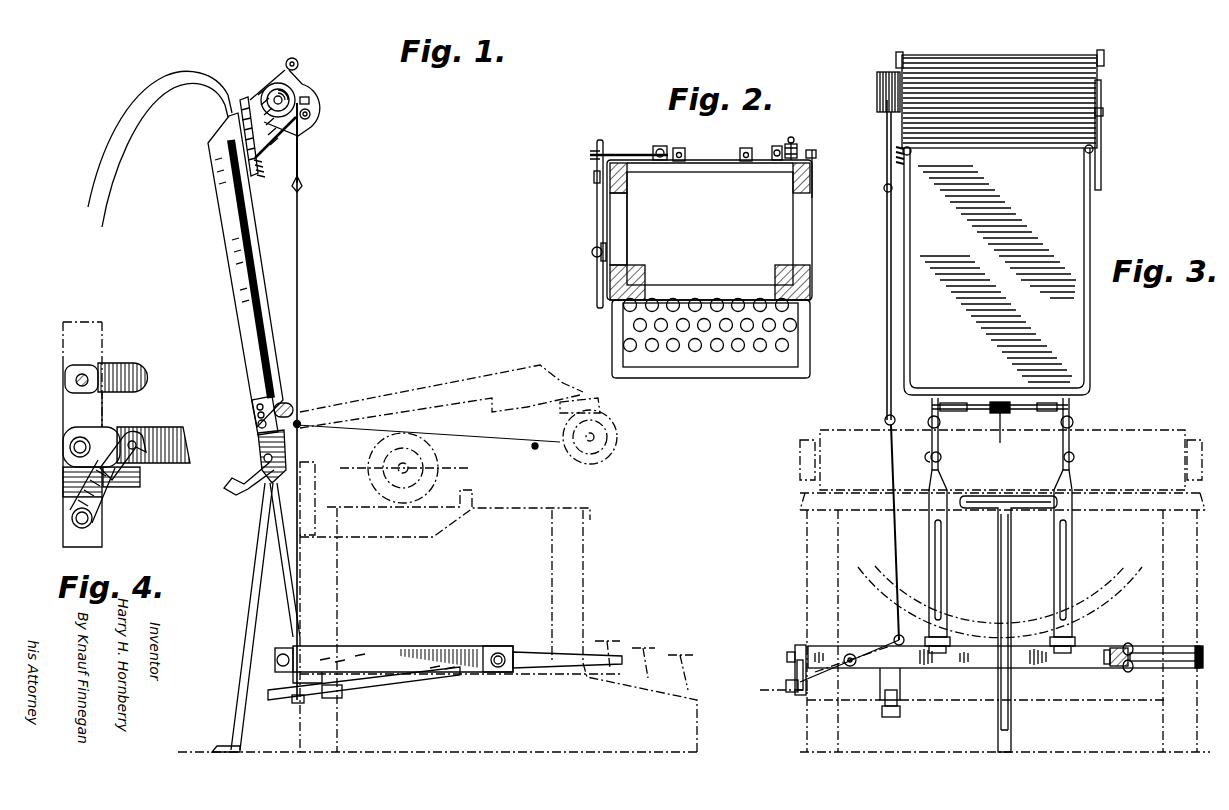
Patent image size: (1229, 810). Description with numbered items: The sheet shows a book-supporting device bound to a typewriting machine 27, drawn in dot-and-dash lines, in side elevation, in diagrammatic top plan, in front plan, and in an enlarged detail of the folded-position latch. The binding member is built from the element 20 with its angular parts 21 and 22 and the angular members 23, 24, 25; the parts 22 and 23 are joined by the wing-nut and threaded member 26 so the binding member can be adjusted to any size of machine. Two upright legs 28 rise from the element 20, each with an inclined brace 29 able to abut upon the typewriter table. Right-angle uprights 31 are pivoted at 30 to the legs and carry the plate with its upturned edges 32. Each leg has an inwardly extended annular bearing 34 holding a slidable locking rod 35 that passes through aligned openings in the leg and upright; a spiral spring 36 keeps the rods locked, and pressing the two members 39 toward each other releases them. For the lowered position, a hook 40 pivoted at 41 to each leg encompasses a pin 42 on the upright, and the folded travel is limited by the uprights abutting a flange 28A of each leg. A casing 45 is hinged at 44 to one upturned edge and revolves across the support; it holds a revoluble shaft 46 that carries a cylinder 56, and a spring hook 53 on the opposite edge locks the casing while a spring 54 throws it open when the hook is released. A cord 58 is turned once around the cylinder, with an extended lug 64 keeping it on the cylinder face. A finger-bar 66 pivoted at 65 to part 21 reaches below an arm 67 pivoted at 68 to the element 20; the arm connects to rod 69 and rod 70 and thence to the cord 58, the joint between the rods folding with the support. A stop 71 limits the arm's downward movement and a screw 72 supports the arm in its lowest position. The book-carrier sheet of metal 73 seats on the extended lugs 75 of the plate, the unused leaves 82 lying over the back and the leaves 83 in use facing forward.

In FIG. 2, the binding member element 20 is at (708, 160).
In FIG. 3, the binding member element 20 is at (955, 670).
In FIG. 1, the angular part 21 is at (395, 650).
In FIG. 2, the angular part 21 is at (607, 207).
In FIG. 3, the angular part 21 is at (800, 646).
In FIG. 2, the angular part 22 is at (775, 148).
In FIG. 3, the angular part 22 is at (1112, 648).
In FIG. 2, the angular member 23 is at (792, 144).
In FIG. 3, the angular member 23 is at (1130, 668).
In FIG. 2, the angular member 24 is at (812, 160).
In FIG. 3, the angular member 24 is at (1190, 653).
In FIG. 2, the angular member 25 is at (813, 180).
In FIG. 3, the angular member 25 is at (1196, 670).
In FIG. 2, the wing-nut and threaded member 26 is at (789, 137).
In FIG. 3, the wing-nut and threaded member 26 is at (1108, 668).
In FIG. 2, the typewriting machine 27 is at (813, 278).
In FIG. 1, the upright leg 28 is at (279, 560).
In FIG. 3, the upright leg 28 is at (928, 552).
In FIG. 4, the upright leg 28 is at (92, 523).
In FIG. 1, the flange 28A is at (300, 422).
In FIG. 4, the flange 28A is at (136, 487).
In FIG. 1, the inclined brace 29 is at (250, 612).
In FIG. 3, the inclined brace 29 is at (1011, 572).
In FIG. 1, the pivot 30 is at (258, 426).
In FIG. 3, the pivot 30 is at (941, 423).
In FIG. 4, the pivot 30 is at (70, 448).
In FIG. 1, the right-angle upright 31 is at (240, 294).
In FIG. 3, the right-angle upright 31 is at (932, 412).
In FIG. 4, the right-angle upright 31 is at (63, 330).
In FIG. 1, the upturned edge 32 is at (235, 95).
In FIG. 3, the upturned edge 32 is at (1102, 120).
In FIG. 3, the annular bearing 34 is at (1050, 403).
In FIG. 1, the locking rod 35 is at (254, 406).
In FIG. 3, the locking rod 35 is at (980, 403).
In FIG. 4, the locking rod 35 is at (76, 384).
In FIG. 3, the spiral spring 36 is at (1000, 443).
In FIG. 1, the release member 39 is at (290, 405).
In FIG. 3, the release member 39 is at (1003, 402).
In FIG. 4, the release member 39 is at (125, 366).
In FIG. 1, the hook 40 is at (236, 488).
In FIG. 3, the hook 40 is at (930, 456).
In FIG. 4, the hook 40 is at (133, 440).
In FIG. 1, the pivot 41 is at (262, 458).
In FIG. 3, the pivot 41 is at (942, 457).
In FIG. 4, the pivot 41 is at (72, 520).
In FIG. 1, the pin 42 is at (256, 410).
In FIG. 4, the pin 42 is at (136, 449).
In FIG. 1, the hinge 44 is at (248, 94).
In FIG. 1, the casing 45 is at (275, 80).
In FIG. 3, the casing 45 is at (1000, 60).
In FIG. 1, the revoluble shaft 46 is at (294, 102).
In FIG. 3, the spring hook 53 is at (1104, 110).
In FIG. 1, the spring 54 is at (262, 173).
In FIG. 3, the spring 54 is at (884, 188).
In FIG. 1, the cylinder 56 is at (288, 94).
In FIG. 3, the cylinder 56 is at (877, 84).
In FIG. 1, the cord 58 is at (299, 156).
In FIG. 3, the cord 58 is at (886, 150).
In FIG. 1, the extended lug 64 is at (309, 101).
In FIG. 1, the pivot 65 is at (500, 650).
In FIG. 2, the pivot 65 is at (594, 252).
In FIG. 3, the pivot 65 is at (787, 655).
In FIG. 1, the finger-bar 66 is at (572, 665).
In FIG. 2, the finger-bar 66 is at (597, 285).
In FIG. 3, the finger-bar 66 is at (796, 675).
In FIG. 1, the arm 67 is at (275, 668).
In FIG. 2, the arm 67 is at (605, 155).
In FIG. 3, the arm 67 is at (818, 676).
In FIG. 2, the pivot 68 is at (660, 146).
In FIG. 3, the pivot 68 is at (851, 654).
In FIG. 1, the rod 69 is at (299, 456).
In FIG. 3, the rod 69 is at (891, 467).
In FIG. 1, the rod 70 is at (299, 276).
In FIG. 3, the rod 70 is at (886, 280).
In FIG. 1, the stop 71 is at (338, 699).
In FIG. 2, the stop 71 is at (594, 177).
In FIG. 3, the stop 71 is at (790, 694).
In FIG. 1, the screw 72 is at (291, 700).
In FIG. 2, the screw 72 is at (678, 147).
In FIG. 3, the screw 72 is at (889, 718).
In FIG. 3, the sheet of metal 73 is at (1092, 215).
In FIG. 3, the extended lug 75 is at (1094, 150).
In FIG. 1, the leaves 82 is at (119, 143).
In FIG. 1, the leaves 83 is at (262, 238).
In FIG. 3, the leaves 83 is at (997, 274).